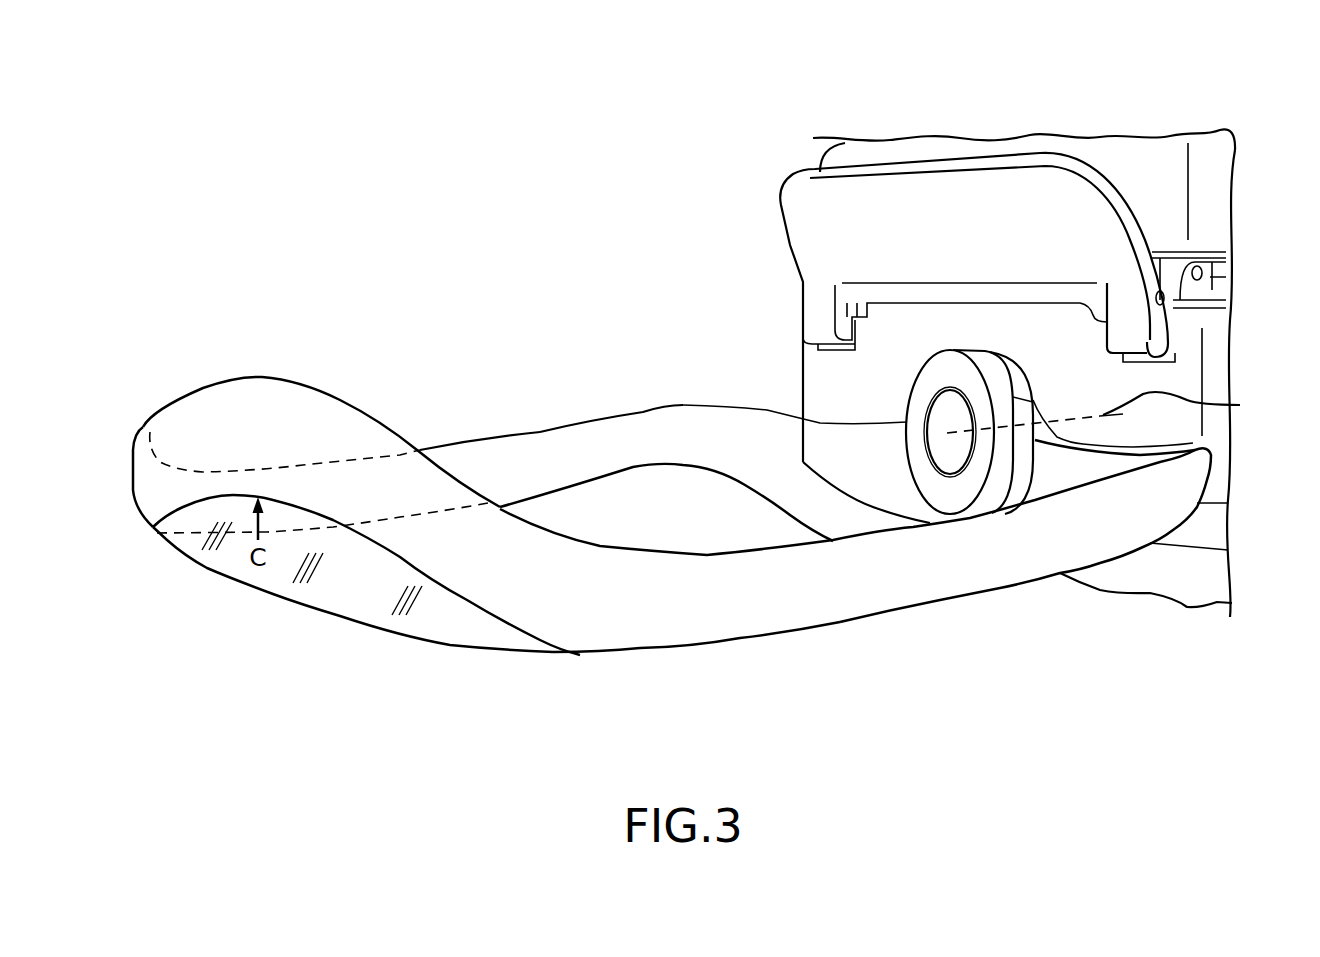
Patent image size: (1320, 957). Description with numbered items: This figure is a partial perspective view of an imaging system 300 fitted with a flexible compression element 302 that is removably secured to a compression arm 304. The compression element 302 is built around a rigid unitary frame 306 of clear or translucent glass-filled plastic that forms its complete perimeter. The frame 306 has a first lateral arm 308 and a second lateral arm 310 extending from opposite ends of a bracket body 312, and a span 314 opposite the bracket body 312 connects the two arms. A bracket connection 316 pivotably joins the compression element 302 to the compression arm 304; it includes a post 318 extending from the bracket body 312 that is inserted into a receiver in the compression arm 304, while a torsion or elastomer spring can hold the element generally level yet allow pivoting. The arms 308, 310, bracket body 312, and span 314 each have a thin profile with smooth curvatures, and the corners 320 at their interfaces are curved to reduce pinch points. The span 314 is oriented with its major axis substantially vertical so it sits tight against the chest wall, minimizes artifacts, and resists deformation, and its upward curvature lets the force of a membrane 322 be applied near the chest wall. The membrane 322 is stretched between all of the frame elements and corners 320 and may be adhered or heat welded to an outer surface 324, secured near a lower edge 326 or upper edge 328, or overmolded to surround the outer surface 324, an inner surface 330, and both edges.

The imaging system 300 is at (704, 141).
The flexible compression element 302 is at (487, 345).
The compression arm 304 is at (832, 357).
The unitary frame 306 is at (590, 437).
The first lateral arm 308 is at (500, 462).
The second lateral arm 310 is at (725, 577).
The bracket body 312 is at (827, 423).
The span 314 is at (297, 413).
The bracket connection 316 is at (943, 372).
The post 318 is at (1220, 403).
The corners 320 is at (701, 421).
The membrane 322 is at (336, 569).
The outer surface 324 is at (209, 465).
The lower edge 326 is at (636, 489).
The upper edge 328 is at (645, 391).
The inner surface 330 is at (558, 452).